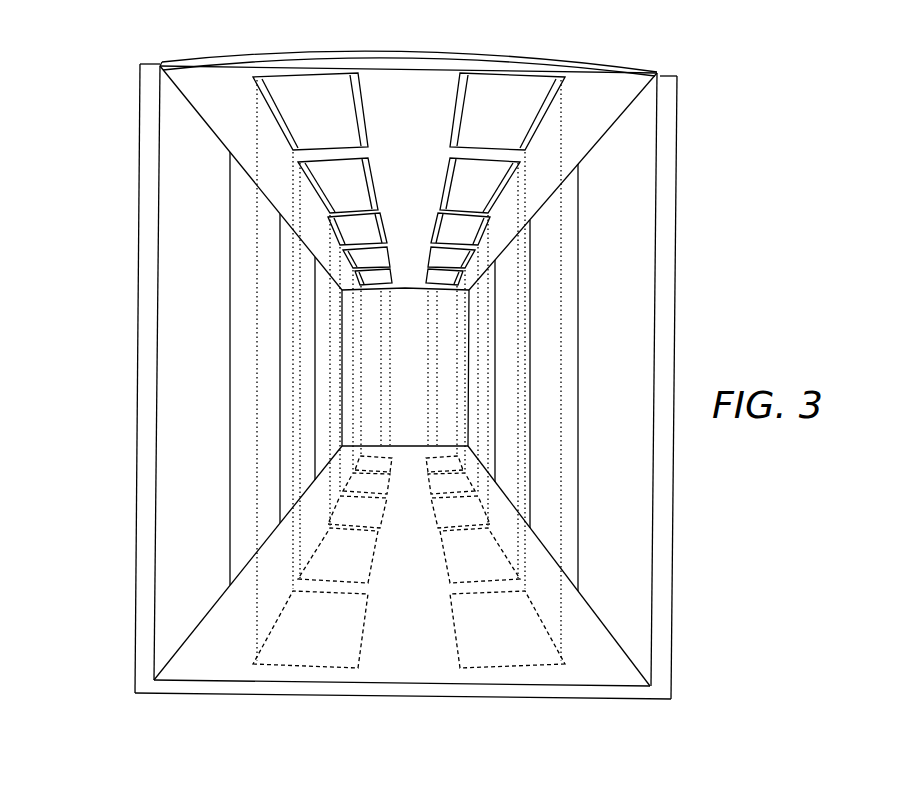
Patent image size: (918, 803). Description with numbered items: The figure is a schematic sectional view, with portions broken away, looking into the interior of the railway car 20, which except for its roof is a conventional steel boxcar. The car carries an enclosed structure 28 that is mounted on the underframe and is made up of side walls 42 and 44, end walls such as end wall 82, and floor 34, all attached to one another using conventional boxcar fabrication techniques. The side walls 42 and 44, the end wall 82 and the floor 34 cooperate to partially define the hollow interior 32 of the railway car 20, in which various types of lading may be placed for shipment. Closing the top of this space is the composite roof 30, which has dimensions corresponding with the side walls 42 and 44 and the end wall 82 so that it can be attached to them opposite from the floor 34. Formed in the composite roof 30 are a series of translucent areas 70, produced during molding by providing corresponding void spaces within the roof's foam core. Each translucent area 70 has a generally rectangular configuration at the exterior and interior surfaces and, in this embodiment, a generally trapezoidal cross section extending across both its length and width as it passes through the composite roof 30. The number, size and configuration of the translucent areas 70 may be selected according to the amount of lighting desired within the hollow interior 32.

The railway car 20 is at (90, 330).
The enclosed structure 28 is at (128, 520).
The composite roof 30 is at (599, 55).
The hollow interior 32 is at (413, 662).
The floor 34 is at (518, 691).
The side wall 42 is at (678, 221).
The side wall 44 is at (138, 216).
The translucent areas 70 is at (298, 113).
The end wall 82 is at (405, 430).